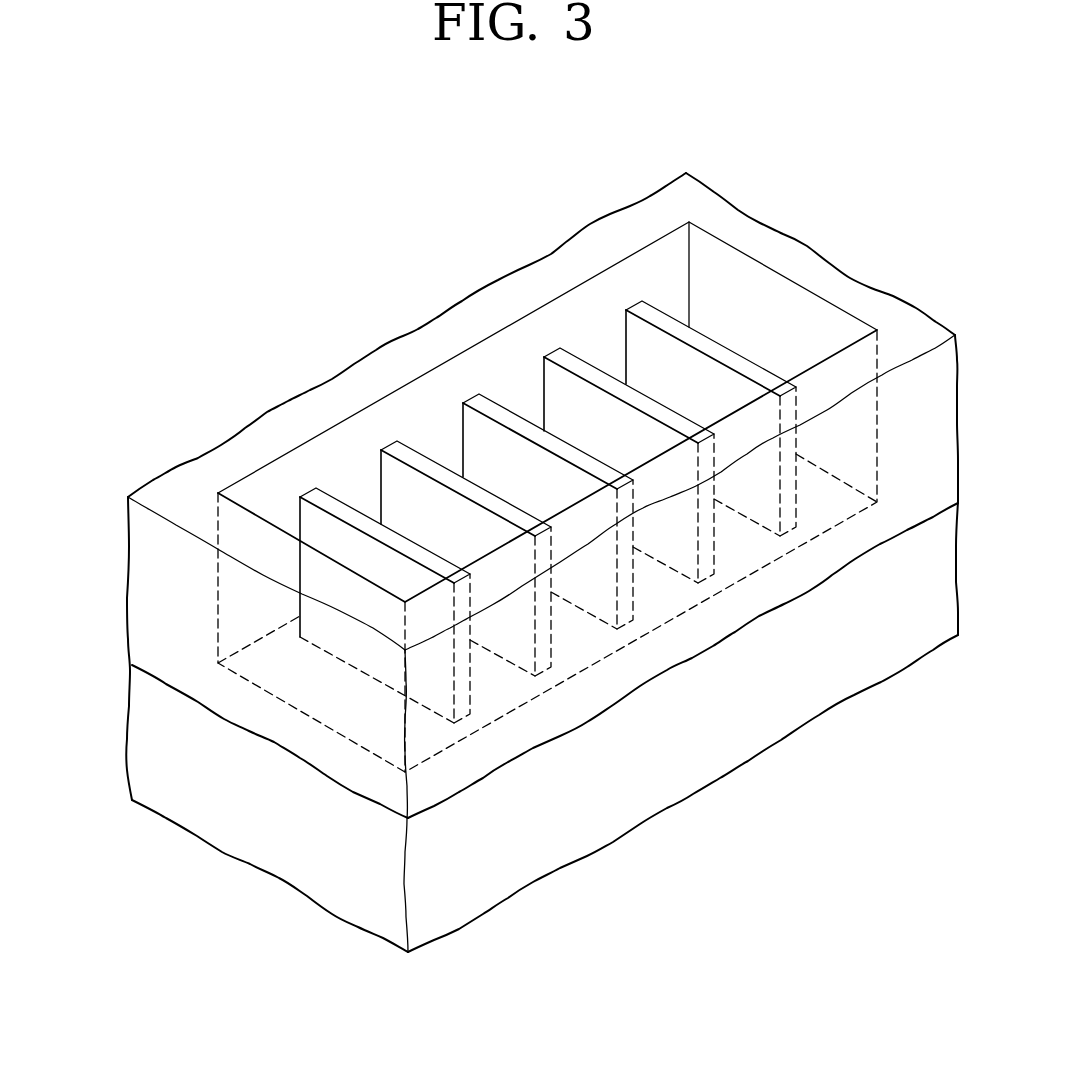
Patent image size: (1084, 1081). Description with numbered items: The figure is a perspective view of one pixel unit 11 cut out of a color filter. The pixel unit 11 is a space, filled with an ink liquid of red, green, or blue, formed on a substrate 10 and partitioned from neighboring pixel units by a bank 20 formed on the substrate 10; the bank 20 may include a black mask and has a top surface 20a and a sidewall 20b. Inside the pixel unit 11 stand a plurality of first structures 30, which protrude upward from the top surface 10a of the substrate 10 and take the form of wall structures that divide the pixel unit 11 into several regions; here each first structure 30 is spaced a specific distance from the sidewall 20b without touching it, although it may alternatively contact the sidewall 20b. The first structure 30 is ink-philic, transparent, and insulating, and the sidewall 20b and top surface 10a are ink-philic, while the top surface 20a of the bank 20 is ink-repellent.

The substrate 10 is at (820, 709).
The top surface of the substrate 10a is at (263, 660).
The pixel unit 11 is at (557, 398).
The bank 20 is at (176, 467).
The top surface of the bank 20a is at (277, 424).
The sidewall of the bank 20b is at (333, 457).
The first structure 30 is at (548, 460).